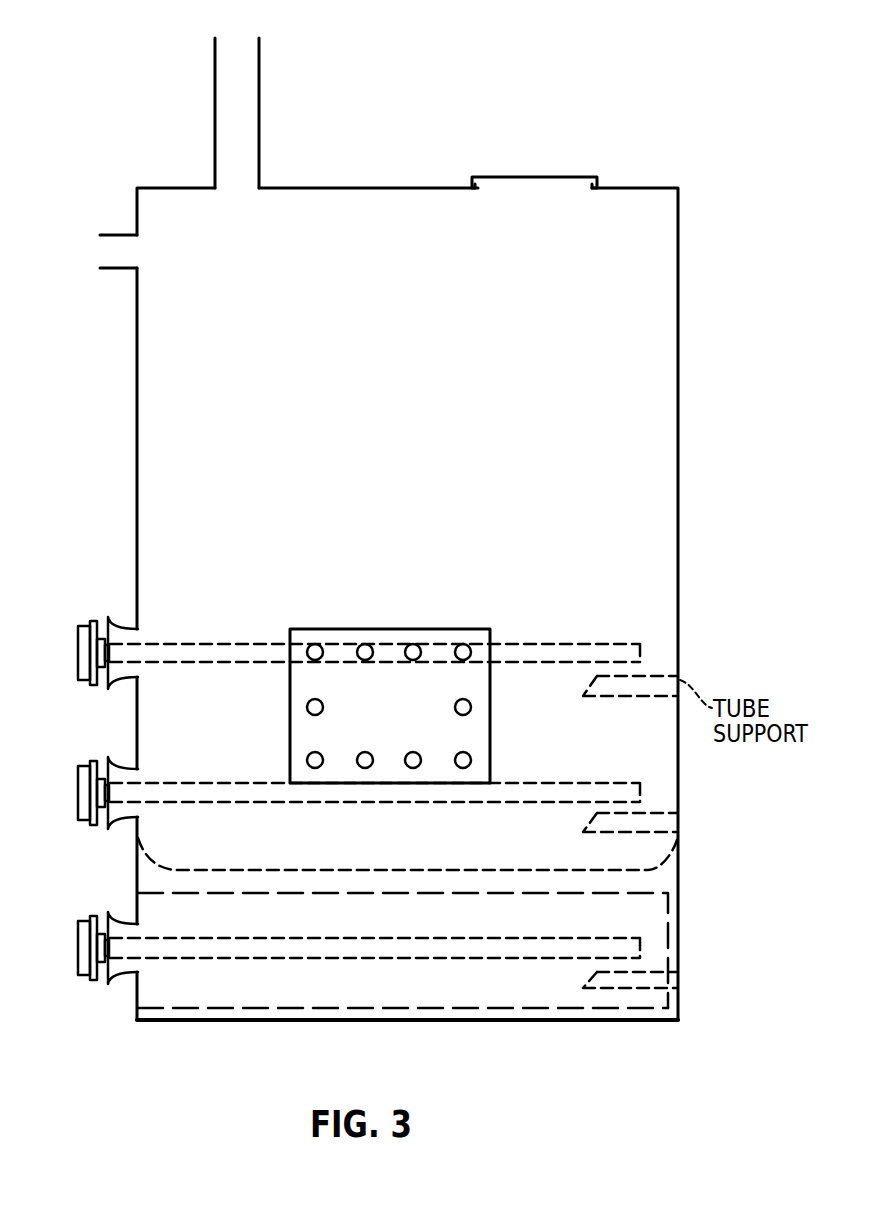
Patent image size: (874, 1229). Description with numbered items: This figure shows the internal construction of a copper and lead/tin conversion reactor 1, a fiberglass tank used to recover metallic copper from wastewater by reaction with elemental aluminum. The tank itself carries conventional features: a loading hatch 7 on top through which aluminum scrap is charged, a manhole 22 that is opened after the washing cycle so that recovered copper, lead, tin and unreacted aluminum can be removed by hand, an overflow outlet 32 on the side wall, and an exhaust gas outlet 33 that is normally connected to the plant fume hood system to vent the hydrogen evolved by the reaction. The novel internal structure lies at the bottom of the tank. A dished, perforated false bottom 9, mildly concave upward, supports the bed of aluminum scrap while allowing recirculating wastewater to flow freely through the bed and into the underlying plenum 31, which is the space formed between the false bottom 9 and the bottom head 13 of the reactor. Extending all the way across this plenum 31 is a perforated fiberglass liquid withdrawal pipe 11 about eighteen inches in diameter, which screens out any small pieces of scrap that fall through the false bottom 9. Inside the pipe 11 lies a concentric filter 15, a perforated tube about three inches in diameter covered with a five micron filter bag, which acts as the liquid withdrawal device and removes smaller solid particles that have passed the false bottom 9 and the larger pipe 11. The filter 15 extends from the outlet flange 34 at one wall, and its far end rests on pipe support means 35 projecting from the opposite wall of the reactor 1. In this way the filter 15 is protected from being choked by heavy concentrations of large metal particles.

The reactor 1 is at (680, 559).
The loading hatch 7 is at (571, 178).
The perforated false bottom 9 is at (680, 872).
The liquid withdrawal pipe 11 is at (265, 1015).
The bottom head 13 is at (462, 1022).
The filter 15 is at (207, 968).
The manhole 22 is at (320, 632).
The plenum 31 is at (632, 922).
The overflow outlet 32 is at (103, 235).
The exhaust gas outlet 33 is at (253, 73).
The outlet flange 34 is at (97, 990).
The pipe support means 35 is at (680, 980).